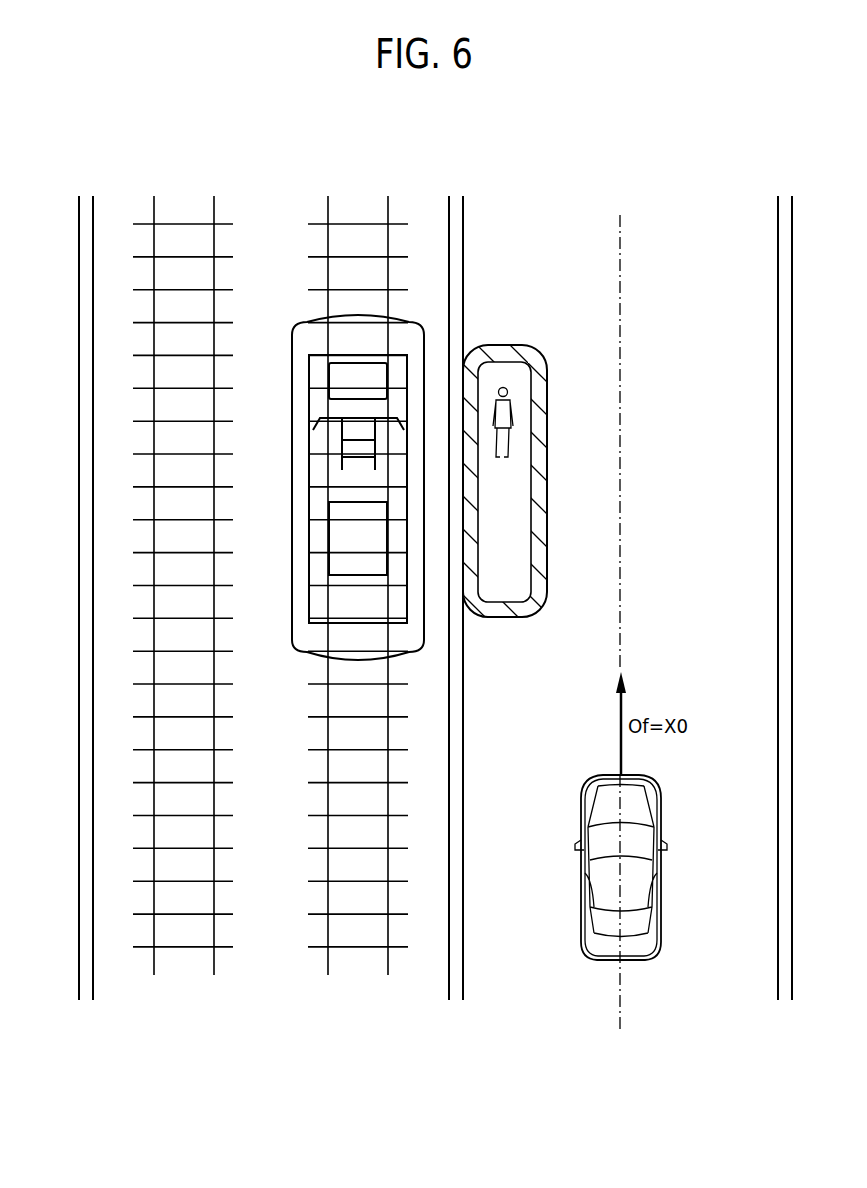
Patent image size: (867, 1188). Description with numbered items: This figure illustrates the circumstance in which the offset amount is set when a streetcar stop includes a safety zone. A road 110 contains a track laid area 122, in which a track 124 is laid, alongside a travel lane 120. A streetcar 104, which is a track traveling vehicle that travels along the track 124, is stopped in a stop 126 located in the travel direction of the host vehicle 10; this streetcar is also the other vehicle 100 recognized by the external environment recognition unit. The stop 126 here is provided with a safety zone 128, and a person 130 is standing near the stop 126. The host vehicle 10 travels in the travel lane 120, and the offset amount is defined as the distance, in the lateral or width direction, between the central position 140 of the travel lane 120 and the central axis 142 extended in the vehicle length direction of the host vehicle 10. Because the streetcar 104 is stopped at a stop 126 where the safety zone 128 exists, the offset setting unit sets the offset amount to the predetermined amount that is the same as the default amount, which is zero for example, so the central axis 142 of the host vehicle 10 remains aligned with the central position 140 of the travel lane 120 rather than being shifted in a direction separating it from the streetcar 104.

The host vehicle 10 is at (655, 792).
The other vehicle 100 is at (288, 622).
The streetcar 104 is at (333, 514).
The road 110 is at (640, 144).
The travel lane 120 is at (778, 187).
The track laid area 122 is at (93, 187).
The track 124 is at (182, 947).
The stop 126 is at (505, 443).
The safety zone 128 is at (510, 353).
The person 130 is at (508, 391).
The central position 140 is at (624, 550).
The central axis 142 is at (622, 893).